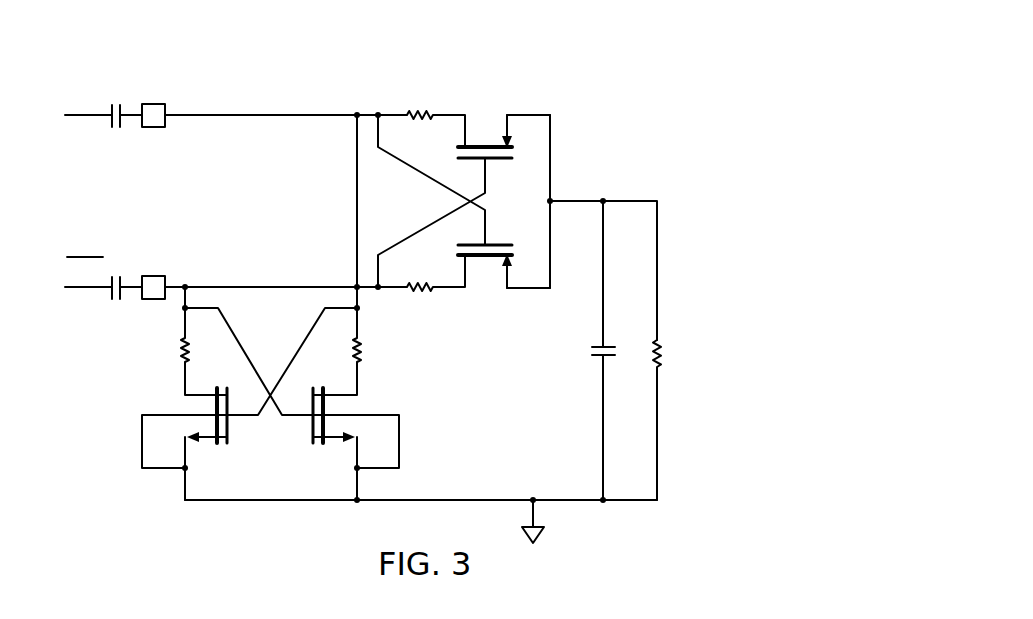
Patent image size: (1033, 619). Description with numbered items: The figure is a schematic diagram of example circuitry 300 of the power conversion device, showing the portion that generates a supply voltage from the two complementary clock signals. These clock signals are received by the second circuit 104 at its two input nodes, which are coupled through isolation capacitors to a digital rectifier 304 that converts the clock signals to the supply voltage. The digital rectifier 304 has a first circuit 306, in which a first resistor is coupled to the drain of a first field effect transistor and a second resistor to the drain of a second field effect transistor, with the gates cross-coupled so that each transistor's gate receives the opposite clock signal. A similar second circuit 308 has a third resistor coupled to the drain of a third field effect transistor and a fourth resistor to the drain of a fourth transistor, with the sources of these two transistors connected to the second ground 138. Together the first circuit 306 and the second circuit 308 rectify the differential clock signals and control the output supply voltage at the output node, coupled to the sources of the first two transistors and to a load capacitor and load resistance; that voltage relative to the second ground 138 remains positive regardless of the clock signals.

The circuitry 300 is at (401, 295).
The digital rectifier 304 is at (440, 74).
The first circuit 306 is at (529, 105).
The second circuit 308 is at (392, 380).
The second circuit 104 is at (681, 168).
The second ground 138 is at (538, 533).